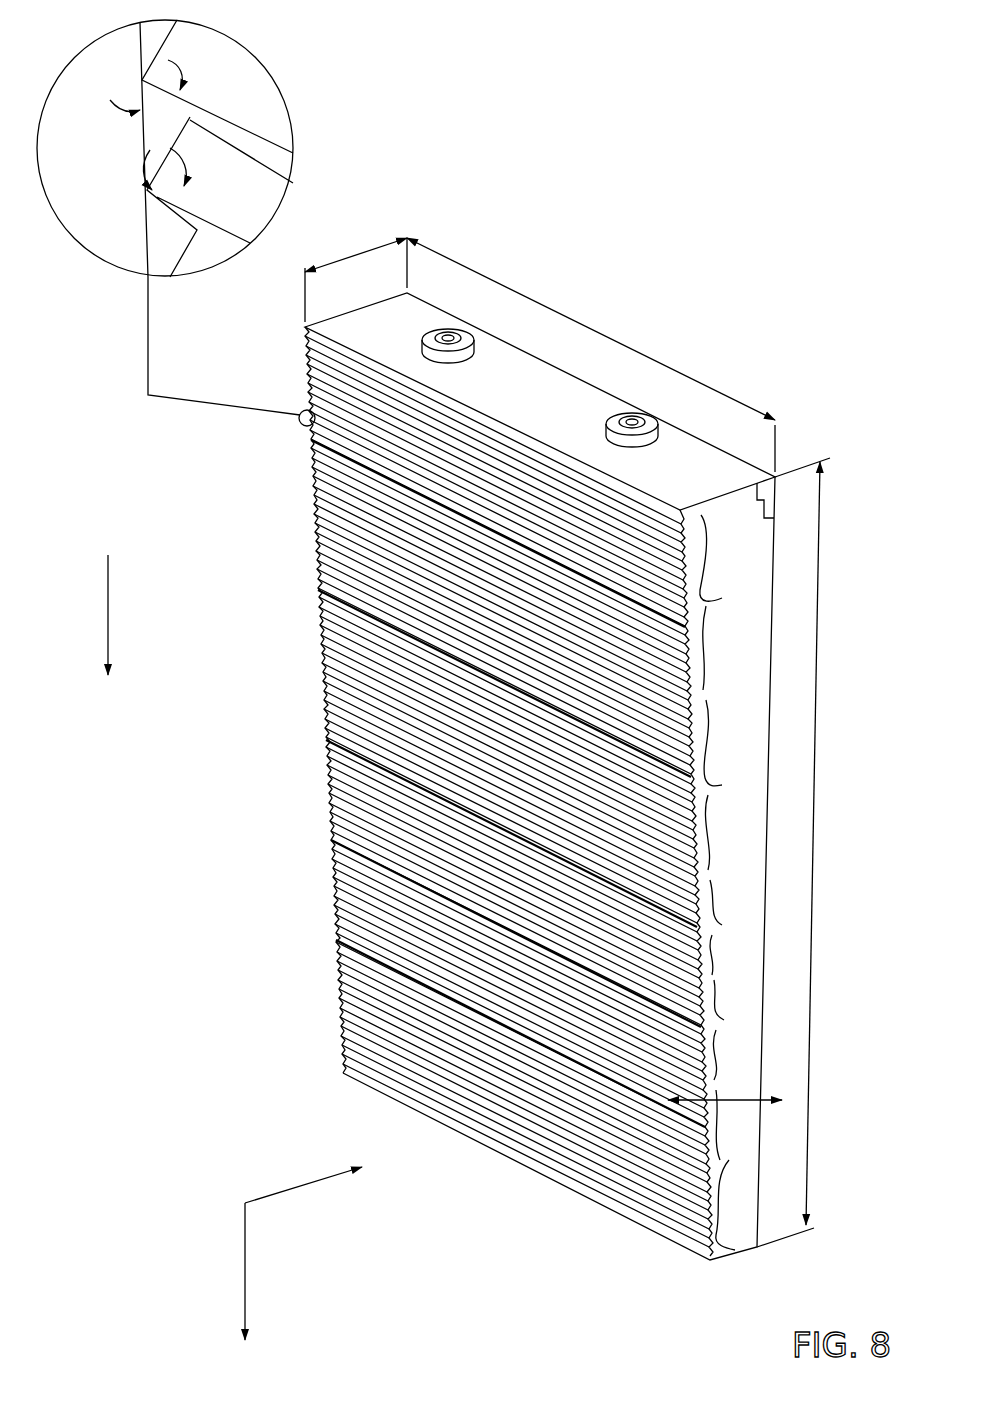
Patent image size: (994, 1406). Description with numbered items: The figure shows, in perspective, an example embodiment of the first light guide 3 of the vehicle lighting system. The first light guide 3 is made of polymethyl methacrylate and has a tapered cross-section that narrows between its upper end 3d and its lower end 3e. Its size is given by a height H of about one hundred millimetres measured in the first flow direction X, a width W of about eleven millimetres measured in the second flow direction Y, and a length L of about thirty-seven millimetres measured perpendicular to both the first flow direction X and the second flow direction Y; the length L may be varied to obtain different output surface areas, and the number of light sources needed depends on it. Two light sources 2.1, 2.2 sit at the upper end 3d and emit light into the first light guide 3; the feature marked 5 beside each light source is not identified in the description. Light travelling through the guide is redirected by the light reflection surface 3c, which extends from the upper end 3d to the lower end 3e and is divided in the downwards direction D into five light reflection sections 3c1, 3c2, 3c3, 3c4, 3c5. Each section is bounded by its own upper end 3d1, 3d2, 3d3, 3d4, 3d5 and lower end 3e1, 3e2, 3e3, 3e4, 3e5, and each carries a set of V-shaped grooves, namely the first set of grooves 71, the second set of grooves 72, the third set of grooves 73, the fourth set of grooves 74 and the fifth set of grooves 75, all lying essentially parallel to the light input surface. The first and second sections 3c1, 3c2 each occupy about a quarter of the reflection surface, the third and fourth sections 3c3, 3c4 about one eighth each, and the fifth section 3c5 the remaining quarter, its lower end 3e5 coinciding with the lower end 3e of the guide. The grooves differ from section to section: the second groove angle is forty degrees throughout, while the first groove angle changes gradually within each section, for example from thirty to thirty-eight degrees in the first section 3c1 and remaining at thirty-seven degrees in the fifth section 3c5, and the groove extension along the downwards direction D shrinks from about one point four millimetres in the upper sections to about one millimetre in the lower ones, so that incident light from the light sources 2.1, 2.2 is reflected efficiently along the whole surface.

The first light guide 3 is at (543, 800).
The light source 2.1 is at (452, 337).
The light source 2.2 is at (636, 421).
The terminal 5 is at (578, 342).
The light reflection surface 3c is at (535, 1122).
The first light reflection section 3c1 is at (722, 598).
The second light reflection section 3c2 is at (722, 785).
The third light reflection section 3c3 is at (722, 925).
The fourth light reflection section 3c4 is at (724, 1020).
The fifth light reflection section 3c5 is at (729, 1160).
The upper end 3d is at (783, 465).
The upper end of first light reflection section 3d1 is at (300, 331).
The upper end of second light reflection section 3d2 is at (307, 527).
The upper end of third light reflection section 3d3 is at (318, 715).
The upper end of fourth light reflection section 3d4 is at (322, 808).
The upper end of fifth light reflection section 3d5 is at (327, 907).
The lower end 3e is at (708, 1268).
The lower end of first light reflection section 3e1 is at (305, 510).
The lower end of second light reflection section 3e2 is at (317, 700).
The lower end of third light reflection section 3e3 is at (322, 795).
The lower end of fourth light reflection section 3e4 is at (325, 893).
The lower end of fifth light reflection section 3e5 is at (328, 1078).
The first set of grooves 71 is at (312, 445).
The second set of grooves 72 is at (318, 582).
The third set of grooves 73 is at (328, 757).
The fourth set of grooves 74 is at (335, 852).
The fifth set of grooves 75 is at (340, 947).
The width W is at (356, 280).
The length L is at (591, 355).
The height H is at (796, 852).
The downwards direction D is at (121, 615).
The first flow direction X is at (257, 1271).
The second flow direction Y is at (303, 1190).